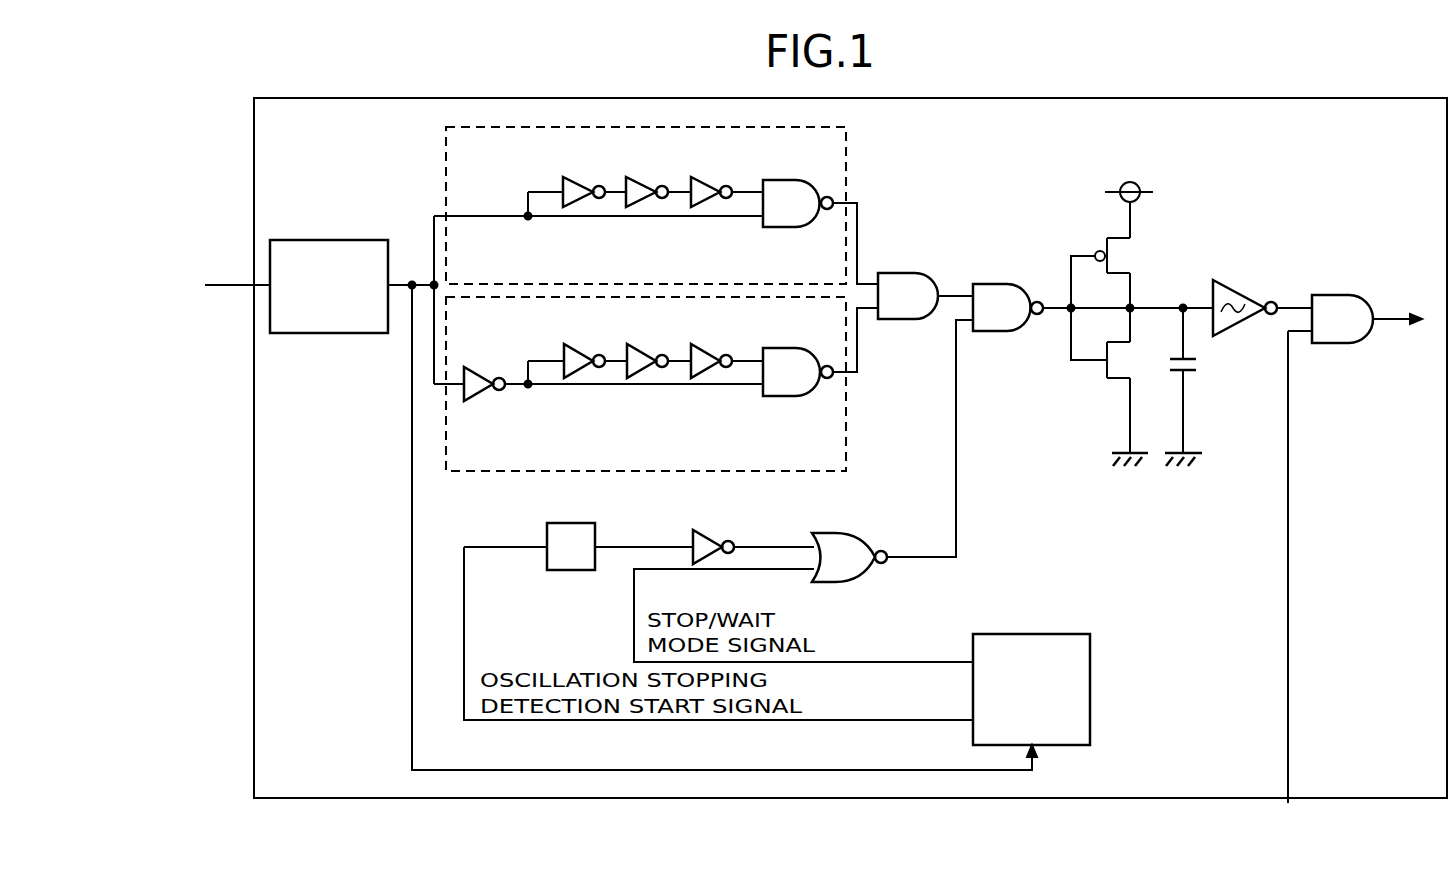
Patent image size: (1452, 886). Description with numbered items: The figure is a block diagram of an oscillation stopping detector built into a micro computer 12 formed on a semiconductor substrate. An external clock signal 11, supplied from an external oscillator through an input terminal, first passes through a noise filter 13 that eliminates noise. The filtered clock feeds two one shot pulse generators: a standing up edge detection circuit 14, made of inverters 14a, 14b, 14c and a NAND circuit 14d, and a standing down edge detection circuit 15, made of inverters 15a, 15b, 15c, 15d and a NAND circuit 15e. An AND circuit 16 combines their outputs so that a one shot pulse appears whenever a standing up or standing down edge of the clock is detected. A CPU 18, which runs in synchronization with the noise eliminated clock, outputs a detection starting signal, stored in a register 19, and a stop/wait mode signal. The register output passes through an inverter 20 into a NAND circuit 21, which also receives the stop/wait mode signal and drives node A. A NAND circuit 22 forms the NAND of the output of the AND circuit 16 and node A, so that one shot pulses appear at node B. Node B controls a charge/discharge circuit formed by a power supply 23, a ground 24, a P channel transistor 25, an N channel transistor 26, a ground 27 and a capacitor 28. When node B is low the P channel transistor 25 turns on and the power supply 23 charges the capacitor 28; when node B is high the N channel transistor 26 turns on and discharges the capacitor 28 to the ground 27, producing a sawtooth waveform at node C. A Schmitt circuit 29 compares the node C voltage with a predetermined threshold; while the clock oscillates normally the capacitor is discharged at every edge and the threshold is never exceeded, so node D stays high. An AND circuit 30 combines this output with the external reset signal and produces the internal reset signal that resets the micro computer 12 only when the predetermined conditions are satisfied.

The clock signal 11 is at (226, 285).
The micro computer 12 is at (253, 153).
The noise filter 13 is at (368, 240).
The standing up edge detection circuit 14 is at (894, 150).
The inverter 14a is at (574, 178).
The inverter 14b is at (642, 178).
The inverter 14c is at (707, 178).
The NAND circuit 14d is at (786, 179).
The standing down edge detection circuit 15 is at (894, 411).
The inverter 15a is at (480, 370).
The inverter 15b is at (578, 345).
The inverter 15c is at (642, 345).
The inverter 15d is at (709, 345).
The NAND circuit 15e is at (787, 347).
The AND circuit 16 is at (906, 272).
The CPU 18 is at (1091, 672).
The register 19 is at (573, 523).
The inverter 20 is at (710, 530).
The NAND circuit 21 is at (838, 533).
The NAND circuit 22 is at (1001, 283).
The power supply 23 is at (1132, 182).
The ground 24 is at (1121, 470).
The P channel transistor 25 is at (1128, 250).
The N channel transistor 26 is at (1118, 382).
The ground 27 is at (1180, 470).
The capacitor 28 is at (1198, 365).
The Schmitt circuit 29 is at (1232, 285).
The AND circuit 30 is at (1335, 295).